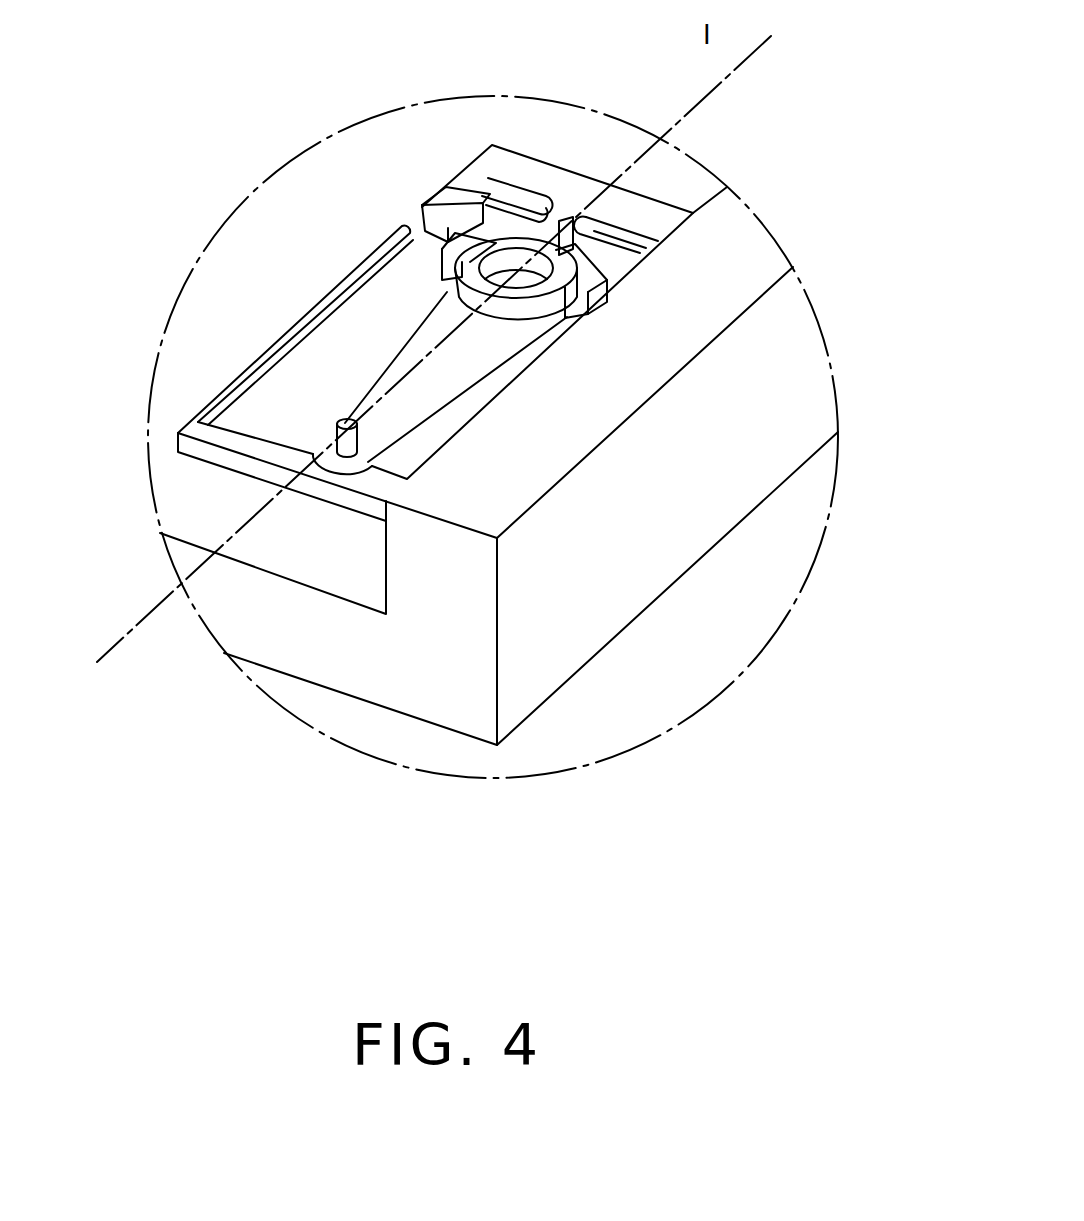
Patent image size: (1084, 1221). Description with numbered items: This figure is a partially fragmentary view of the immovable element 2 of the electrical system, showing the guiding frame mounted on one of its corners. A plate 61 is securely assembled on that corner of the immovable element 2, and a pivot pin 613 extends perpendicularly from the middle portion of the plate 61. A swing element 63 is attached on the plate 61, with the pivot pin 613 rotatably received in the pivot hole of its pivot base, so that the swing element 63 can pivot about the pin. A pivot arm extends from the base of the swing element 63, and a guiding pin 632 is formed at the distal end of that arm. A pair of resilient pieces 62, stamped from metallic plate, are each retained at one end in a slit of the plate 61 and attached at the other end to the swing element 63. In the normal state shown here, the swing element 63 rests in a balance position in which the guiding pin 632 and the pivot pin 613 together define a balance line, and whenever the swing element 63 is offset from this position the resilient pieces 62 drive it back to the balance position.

The immovable element 2 is at (730, 263).
The plate 61 is at (178, 452).
The resilient piece 62 is at (450, 195).
The pivot pin 613 is at (575, 303).
The swing element 63 is at (478, 380).
The guiding pin 632 is at (350, 445).